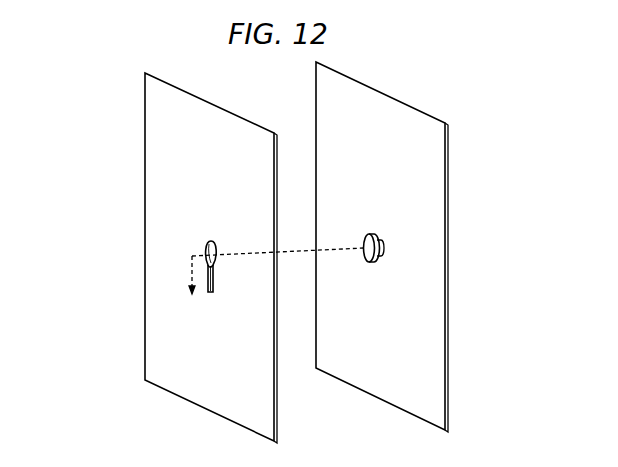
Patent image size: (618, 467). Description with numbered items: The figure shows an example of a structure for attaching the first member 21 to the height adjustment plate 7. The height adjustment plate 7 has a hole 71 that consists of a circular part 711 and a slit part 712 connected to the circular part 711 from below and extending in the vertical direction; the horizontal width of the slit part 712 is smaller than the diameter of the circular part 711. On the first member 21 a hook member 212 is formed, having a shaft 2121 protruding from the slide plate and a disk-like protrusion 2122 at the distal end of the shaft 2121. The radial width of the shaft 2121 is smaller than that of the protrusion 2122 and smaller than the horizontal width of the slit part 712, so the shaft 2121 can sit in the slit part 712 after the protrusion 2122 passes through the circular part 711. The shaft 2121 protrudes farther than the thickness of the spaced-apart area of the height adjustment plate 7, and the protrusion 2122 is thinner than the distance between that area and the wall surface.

The height adjustment plate 7 is at (152, 157).
The first member 21 is at (440, 152).
The hole 71 is at (201, 266).
The circular part 711 is at (206, 249).
The slit part 712 is at (208, 284).
The hook member 212 is at (473, 262).
The shaft 2121 is at (383, 243).
The protrusion 2122 is at (380, 258).